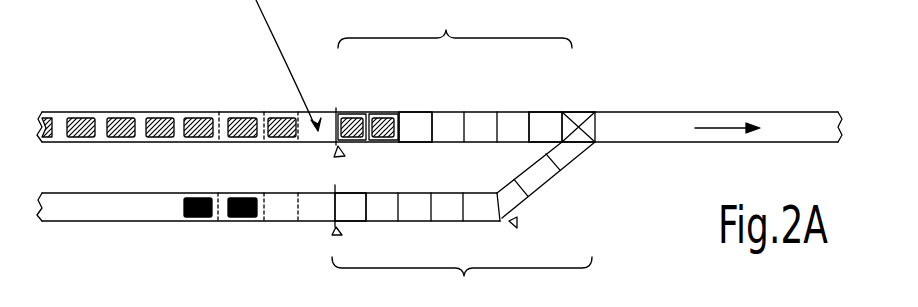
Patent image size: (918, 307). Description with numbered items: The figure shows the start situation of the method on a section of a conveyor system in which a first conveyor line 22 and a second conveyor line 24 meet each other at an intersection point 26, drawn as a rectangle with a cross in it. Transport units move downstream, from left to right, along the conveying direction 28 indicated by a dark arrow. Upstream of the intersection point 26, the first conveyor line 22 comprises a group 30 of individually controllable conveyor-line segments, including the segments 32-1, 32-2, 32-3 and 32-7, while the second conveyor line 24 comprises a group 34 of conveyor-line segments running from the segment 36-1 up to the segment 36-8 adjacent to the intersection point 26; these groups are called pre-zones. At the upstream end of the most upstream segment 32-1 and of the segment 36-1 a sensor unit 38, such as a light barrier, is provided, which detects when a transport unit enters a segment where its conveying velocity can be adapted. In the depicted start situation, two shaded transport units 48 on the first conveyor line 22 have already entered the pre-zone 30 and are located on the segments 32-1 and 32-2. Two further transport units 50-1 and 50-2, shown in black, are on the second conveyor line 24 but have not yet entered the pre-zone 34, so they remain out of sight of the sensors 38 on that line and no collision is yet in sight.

The first conveyor line 22 is at (180, 126).
The second conveyor line 24 is at (180, 218).
The intersection point 26 is at (582, 110).
The conveying direction 28 is at (722, 127).
The group of conveyor-line segments (pre-zone) 30 is at (455, 26).
The conveyor-line segment 32-1 is at (350, 113).
The conveyor-line segment 32-2 is at (385, 114).
The conveyor-line segment 32-3 is at (417, 143).
The conveyor-line segment 32-7 is at (542, 112).
The group of conveyor-line segments (pre-zone) 34 is at (462, 278).
The conveyor-line segment 36-1 is at (357, 222).
The conveyor-line segment 36-8 is at (577, 162).
The sensor unit 38 is at (338, 156).
The transport units 48 is at (78, 117).
The transport unit 50-1 is at (240, 218).
The transport unit 50-2 is at (197, 197).